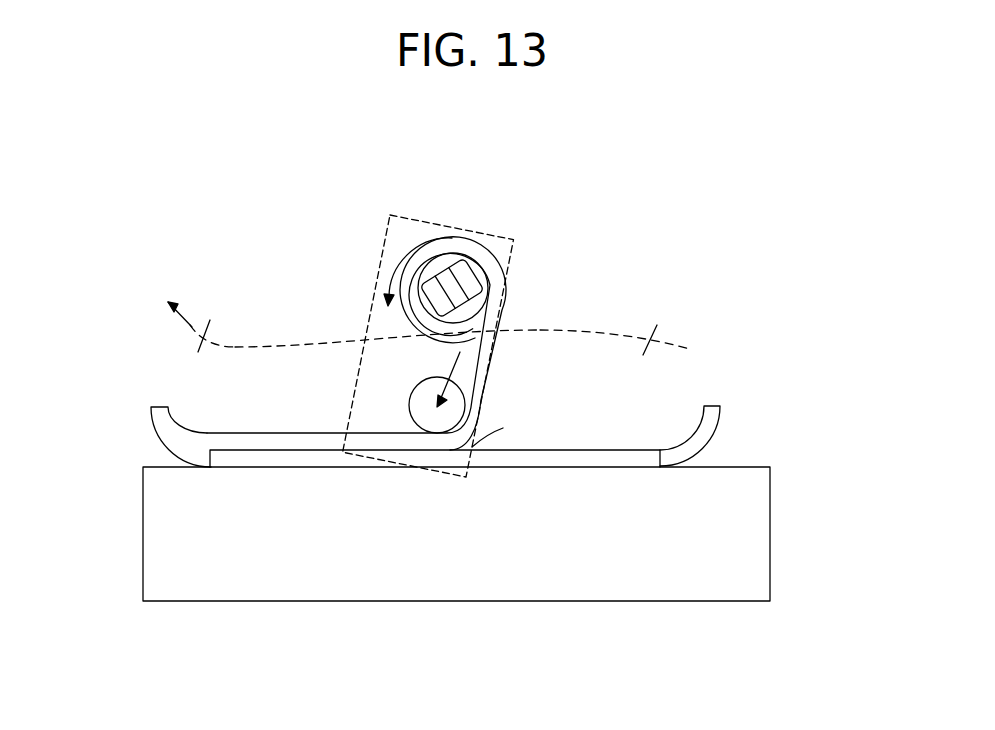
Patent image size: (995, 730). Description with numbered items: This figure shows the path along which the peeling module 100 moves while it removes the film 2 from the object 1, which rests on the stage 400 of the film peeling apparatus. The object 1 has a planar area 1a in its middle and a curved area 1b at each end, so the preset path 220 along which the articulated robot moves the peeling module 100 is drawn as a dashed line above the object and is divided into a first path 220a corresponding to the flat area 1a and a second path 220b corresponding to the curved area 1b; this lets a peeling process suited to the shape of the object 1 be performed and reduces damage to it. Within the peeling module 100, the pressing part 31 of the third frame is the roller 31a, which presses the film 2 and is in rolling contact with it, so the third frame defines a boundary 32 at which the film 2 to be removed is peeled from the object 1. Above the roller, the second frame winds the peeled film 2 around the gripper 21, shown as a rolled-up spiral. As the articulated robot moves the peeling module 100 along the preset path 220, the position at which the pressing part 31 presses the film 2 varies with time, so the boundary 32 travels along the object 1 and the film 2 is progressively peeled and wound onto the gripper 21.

The object 1 is at (435, 484).
The planar area 1a is at (310, 462).
The curved area 1b is at (685, 526).
The film 2 is at (309, 440).
The gripper 21 is at (482, 288).
The pressing part 31 is at (509, 392).
The roller 31a is at (463, 411).
The boundary 32 is at (503, 431).
The peeling module 100 is at (457, 228).
The path 220 is at (386, 495).
The first path 220a is at (292, 344).
The second path 220b is at (204, 324).
The stage 400 is at (760, 532).